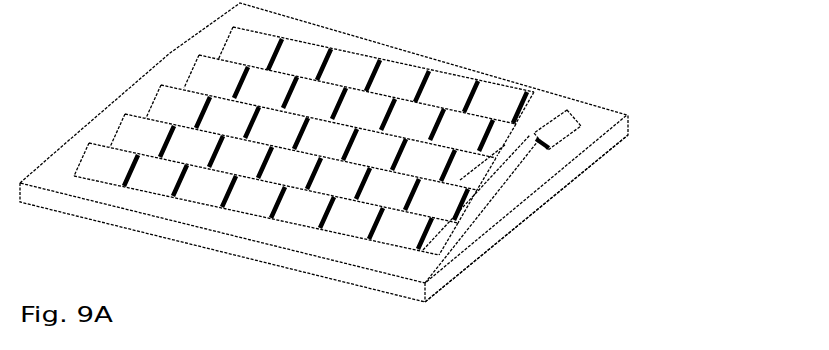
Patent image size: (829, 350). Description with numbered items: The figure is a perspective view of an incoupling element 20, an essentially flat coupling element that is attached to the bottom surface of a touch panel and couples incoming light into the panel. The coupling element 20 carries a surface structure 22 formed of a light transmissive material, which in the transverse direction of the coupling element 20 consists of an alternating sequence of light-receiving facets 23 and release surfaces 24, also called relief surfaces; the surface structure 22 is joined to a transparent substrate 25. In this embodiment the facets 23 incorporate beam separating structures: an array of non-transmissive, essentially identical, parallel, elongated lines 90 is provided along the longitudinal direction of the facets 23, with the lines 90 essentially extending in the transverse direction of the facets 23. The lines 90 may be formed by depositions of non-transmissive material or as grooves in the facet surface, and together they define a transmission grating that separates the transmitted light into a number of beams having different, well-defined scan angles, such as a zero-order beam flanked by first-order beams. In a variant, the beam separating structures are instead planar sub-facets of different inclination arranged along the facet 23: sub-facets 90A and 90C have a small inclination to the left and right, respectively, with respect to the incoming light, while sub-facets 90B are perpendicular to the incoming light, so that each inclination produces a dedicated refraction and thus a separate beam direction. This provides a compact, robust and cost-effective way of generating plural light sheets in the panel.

The coupling element 20 is at (610, 107).
The surface structure 22 is at (203, 86).
The light-receiving facets 23 is at (448, 201).
The release surfaces 24 is at (517, 167).
The transparent substrate 25 is at (470, 256).
The elongated lines 90 is at (503, 103).
The sub-facets 90A is at (112, 175).
The sub-facets 90B is at (157, 183).
The sub-facets 90C is at (207, 195).